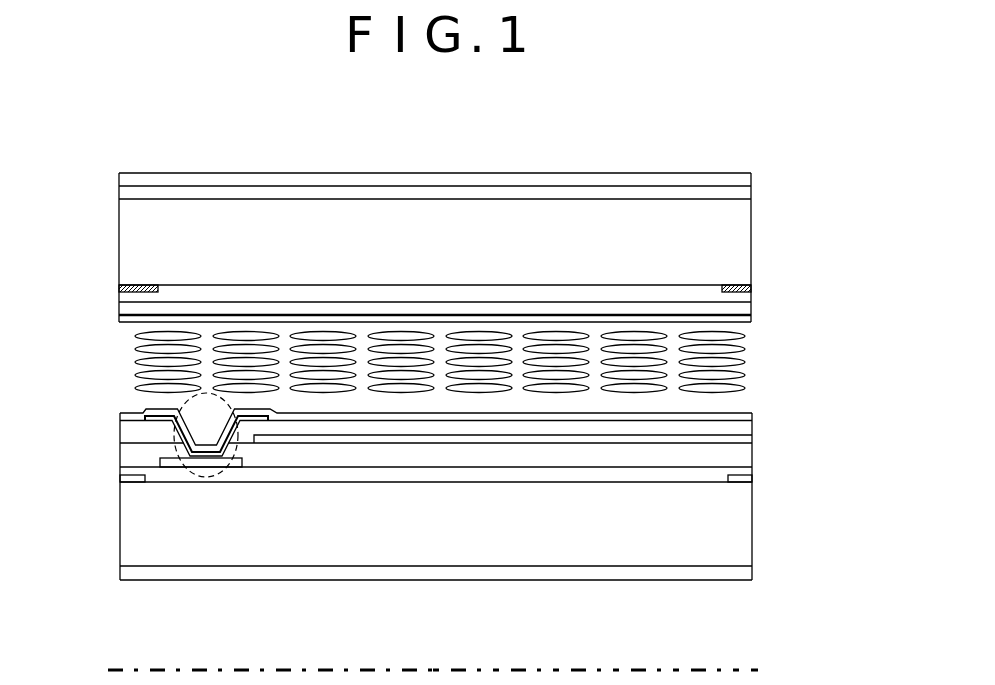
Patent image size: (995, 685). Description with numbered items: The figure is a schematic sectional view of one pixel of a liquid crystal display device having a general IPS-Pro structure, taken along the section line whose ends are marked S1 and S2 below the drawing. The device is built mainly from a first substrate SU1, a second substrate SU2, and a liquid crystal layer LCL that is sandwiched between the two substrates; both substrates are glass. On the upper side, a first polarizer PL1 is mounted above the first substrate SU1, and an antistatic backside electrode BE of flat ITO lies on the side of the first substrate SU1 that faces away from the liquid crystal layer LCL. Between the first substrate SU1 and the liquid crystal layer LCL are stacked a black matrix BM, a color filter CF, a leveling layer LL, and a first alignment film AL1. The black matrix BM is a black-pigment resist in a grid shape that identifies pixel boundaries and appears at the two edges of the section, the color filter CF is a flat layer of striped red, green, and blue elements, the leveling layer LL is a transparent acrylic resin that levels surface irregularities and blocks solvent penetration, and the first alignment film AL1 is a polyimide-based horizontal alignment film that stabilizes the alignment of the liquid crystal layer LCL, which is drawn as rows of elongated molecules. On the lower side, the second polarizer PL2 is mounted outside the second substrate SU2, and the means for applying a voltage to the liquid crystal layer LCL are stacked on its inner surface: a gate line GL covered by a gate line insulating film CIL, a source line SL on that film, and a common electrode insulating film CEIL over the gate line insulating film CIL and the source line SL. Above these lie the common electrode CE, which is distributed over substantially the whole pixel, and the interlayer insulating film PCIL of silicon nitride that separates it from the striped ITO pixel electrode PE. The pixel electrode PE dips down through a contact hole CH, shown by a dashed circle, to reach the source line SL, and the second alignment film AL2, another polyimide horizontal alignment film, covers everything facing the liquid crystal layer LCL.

The first polarizer PL1 is at (742, 180).
The backside electrode BE is at (127, 193).
The first substrate SU1 is at (740, 238).
The black matrix BM is at (122, 288).
The color filter CF is at (598, 292).
The leveling layer LL is at (742, 307).
The first alignment film AL1 is at (127, 319).
The liquid crystal layer LCL is at (755, 362).
The second alignment film AL2 is at (750, 418).
The pixel electrode PE is at (258, 421).
The contact hole CH is at (212, 478).
The source line SL is at (175, 468).
The gate line insulating film CIL is at (410, 473).
The common electrode CE is at (544, 440).
The common electrode insulating film CEIL is at (481, 452).
The interlayer insulating film PCIL is at (632, 427).
The gate line GL is at (752, 480).
The second substrate SU2 is at (745, 525).
The second polarizer PL2 is at (745, 572).
The section line end S1 is at (250, 669).
The section line end S2 is at (618, 669).